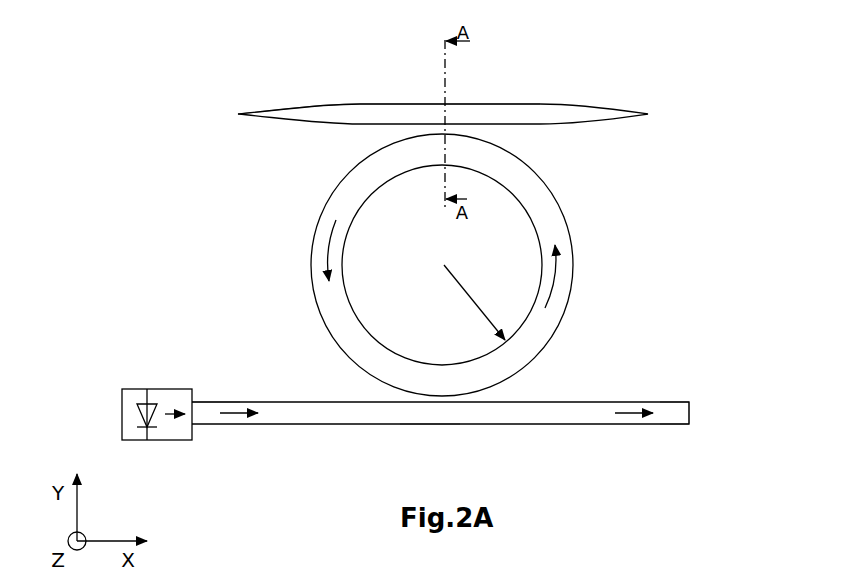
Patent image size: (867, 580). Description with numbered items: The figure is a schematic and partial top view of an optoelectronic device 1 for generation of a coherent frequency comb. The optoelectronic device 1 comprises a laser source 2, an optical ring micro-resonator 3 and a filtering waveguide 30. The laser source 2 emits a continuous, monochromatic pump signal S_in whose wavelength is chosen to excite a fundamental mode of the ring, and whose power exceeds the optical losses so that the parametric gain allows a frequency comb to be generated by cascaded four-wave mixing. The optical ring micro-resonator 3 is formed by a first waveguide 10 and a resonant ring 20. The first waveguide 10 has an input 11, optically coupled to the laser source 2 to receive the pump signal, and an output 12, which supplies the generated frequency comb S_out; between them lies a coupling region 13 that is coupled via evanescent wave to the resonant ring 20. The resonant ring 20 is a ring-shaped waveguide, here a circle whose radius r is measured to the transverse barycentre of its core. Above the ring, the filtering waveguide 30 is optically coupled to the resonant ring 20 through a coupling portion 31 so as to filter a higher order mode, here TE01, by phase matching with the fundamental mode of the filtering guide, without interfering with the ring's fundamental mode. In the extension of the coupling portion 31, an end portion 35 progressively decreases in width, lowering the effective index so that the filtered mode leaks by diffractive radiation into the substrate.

The optoelectronic device 1 is at (218, 178).
The laser source 2 is at (155, 387).
The optical ring micro-resonator 3 is at (260, 245).
The first waveguide 10 is at (300, 401).
The input 11 is at (221, 403).
The output 12 is at (668, 403).
The coupling region 13 is at (428, 425).
The resonant ring 20 is at (574, 265).
The filtering waveguide 30 is at (536, 82).
The coupling portion 31 is at (425, 103).
The end portion 35 is at (308, 107).